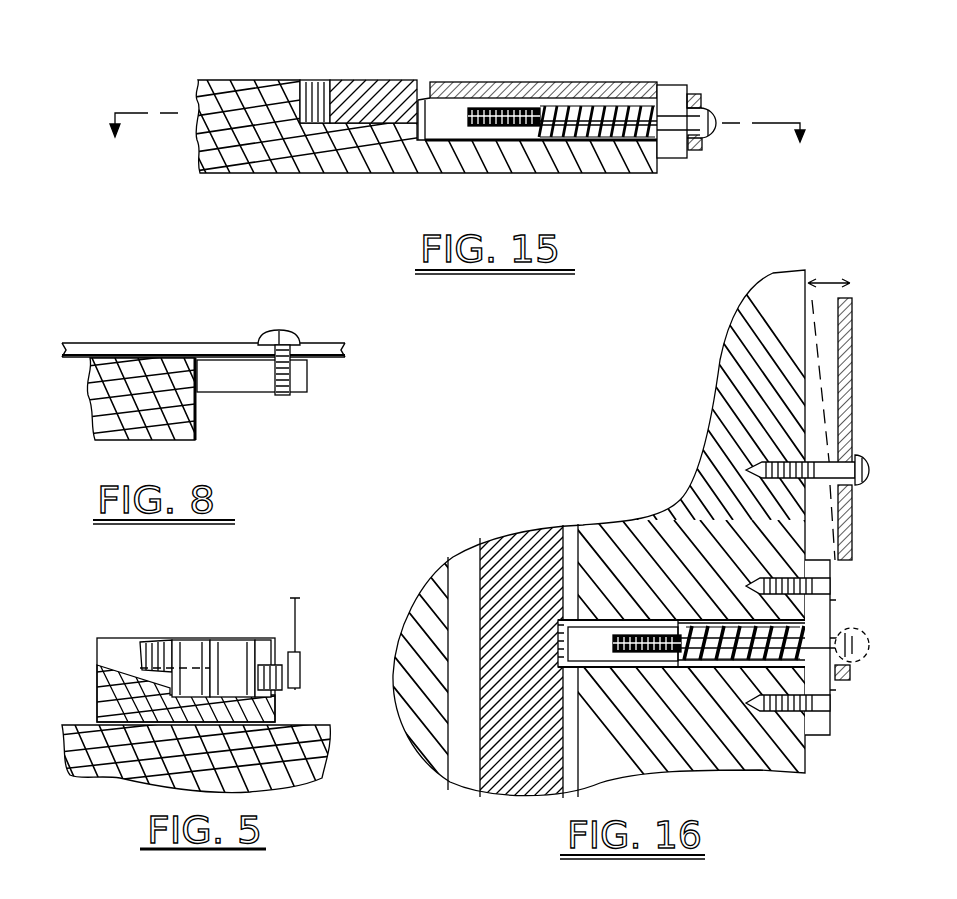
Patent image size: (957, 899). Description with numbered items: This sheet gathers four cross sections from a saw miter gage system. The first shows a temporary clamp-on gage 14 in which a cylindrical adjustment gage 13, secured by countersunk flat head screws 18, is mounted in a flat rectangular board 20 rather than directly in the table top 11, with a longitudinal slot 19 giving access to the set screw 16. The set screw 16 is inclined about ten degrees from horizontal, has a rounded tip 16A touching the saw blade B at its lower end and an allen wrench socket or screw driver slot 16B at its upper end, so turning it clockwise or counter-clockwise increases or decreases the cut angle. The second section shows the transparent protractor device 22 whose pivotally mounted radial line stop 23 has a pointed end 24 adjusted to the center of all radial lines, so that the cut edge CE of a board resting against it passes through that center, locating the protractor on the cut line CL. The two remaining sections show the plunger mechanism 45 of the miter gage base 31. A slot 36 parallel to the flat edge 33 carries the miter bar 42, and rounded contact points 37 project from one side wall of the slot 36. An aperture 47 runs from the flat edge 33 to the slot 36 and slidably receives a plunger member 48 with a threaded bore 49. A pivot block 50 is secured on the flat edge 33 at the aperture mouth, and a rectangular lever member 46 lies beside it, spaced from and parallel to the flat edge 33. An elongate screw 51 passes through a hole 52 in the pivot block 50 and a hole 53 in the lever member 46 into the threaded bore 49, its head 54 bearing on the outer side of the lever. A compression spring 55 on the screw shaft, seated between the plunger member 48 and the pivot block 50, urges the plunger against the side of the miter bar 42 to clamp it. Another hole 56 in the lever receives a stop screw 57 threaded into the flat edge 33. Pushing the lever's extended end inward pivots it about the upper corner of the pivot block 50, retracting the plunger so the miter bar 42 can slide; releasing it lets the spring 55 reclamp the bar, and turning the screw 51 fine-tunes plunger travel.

In FIG. 5, the table top 11 is at (106, 768).
In FIG. 5, the adjustment gage 13 is at (246, 642).
In FIG. 5, the clamp-on gage 14 is at (96, 620).
In FIG. 15, the set screw 16 is at (455, 146).
In FIG. 5, the set screw 16 is at (165, 650).
In FIG. 5, the rounded tip 16A is at (276, 690).
In FIG. 5, the allen wrench socket or screw driver slot 16B is at (140, 656).
In FIG. 5, the countersunk flat head screws 18 is at (220, 650).
In FIG. 5, the longitudinal slot 19 is at (112, 650).
In FIG. 5, the flat rectangular board 20 is at (102, 688).
In FIG. 8, the protractor device 22 is at (84, 352).
In FIG. 8, the radial line stop 23 is at (215, 385).
In FIG. 8, the pointed end 24 is at (178, 358).
In FIG. 15, the base 31 is at (237, 92).
In FIG. 16, the base 31 is at (418, 612).
In FIG. 15, the flat edge 33 is at (657, 165).
In FIG. 16, the flat edge 33 is at (800, 393).
In FIG. 15, the slot 36 is at (305, 80).
In FIG. 16, the slot 36 is at (455, 560).
In FIG. 15, the contact points 37 is at (320, 86).
In FIG. 15, the miter bar 42 is at (388, 80).
In FIG. 16, the miter bar 42 is at (516, 530).
In FIG. 15, the plunger mechanism 45 is at (776, 98).
In FIG. 16, the plunger mechanism 45 is at (800, 800).
In FIG. 15, the lever member 46 is at (697, 94).
In FIG. 16, the lever member 46 is at (854, 382).
In FIG. 15, the aperture 47 is at (563, 105).
In FIG. 16, the aperture 47 is at (684, 620).
In FIG. 15, the plunger member 48 is at (447, 108).
In FIG. 16, the plunger member 48 is at (596, 633).
In FIG. 15, the threaded bore 49 is at (470, 120).
In FIG. 16, the threaded bore 49 is at (618, 655).
In FIG. 15, the pivot block 50 is at (672, 95).
In FIG. 16, the pivot block 50 is at (818, 725).
In FIG. 15, the elongate screw 51 is at (570, 128).
In FIG. 16, the elongate screw 51 is at (730, 628).
In FIG. 15, the hole 52 is at (640, 130).
In FIG. 16, the hole 52 is at (842, 680).
In FIG. 15, the hole 53 is at (700, 142).
In FIG. 16, the hole 53 is at (848, 607).
In FIG. 15, the head 54 is at (716, 114).
In FIG. 16, the head 54 is at (868, 660).
In FIG. 15, the compression spring 55 is at (605, 108).
In FIG. 16, the compression spring 55 is at (708, 665).
In FIG. 16, the hole 56 is at (852, 495).
In FIG. 16, the stop screw 57 is at (862, 470).
In FIG. 5, the saw blade B is at (300, 668).
In FIG. 8, the cut edge CE is at (200, 405).
In FIG. 8, the cut line CL is at (198, 437).